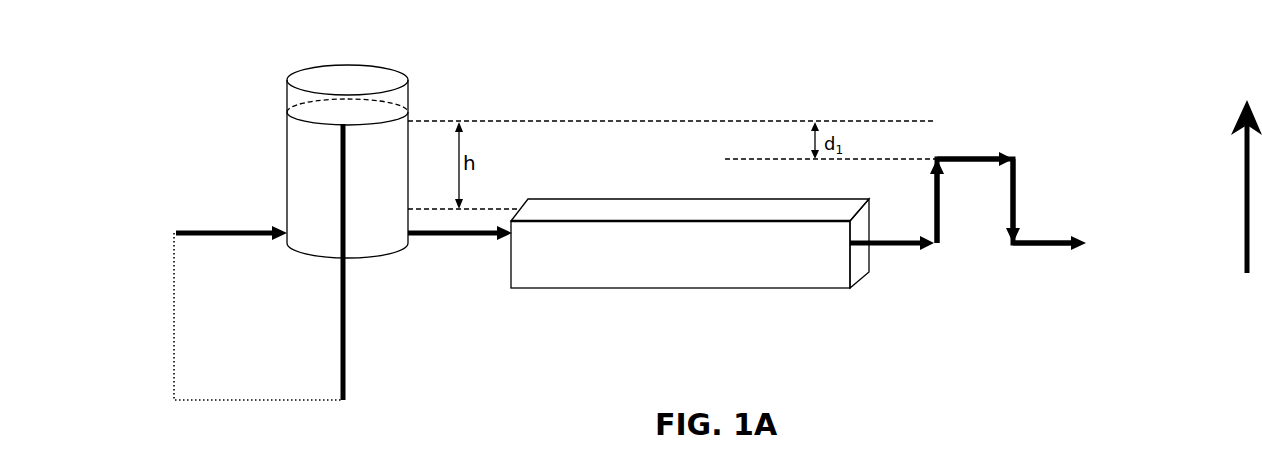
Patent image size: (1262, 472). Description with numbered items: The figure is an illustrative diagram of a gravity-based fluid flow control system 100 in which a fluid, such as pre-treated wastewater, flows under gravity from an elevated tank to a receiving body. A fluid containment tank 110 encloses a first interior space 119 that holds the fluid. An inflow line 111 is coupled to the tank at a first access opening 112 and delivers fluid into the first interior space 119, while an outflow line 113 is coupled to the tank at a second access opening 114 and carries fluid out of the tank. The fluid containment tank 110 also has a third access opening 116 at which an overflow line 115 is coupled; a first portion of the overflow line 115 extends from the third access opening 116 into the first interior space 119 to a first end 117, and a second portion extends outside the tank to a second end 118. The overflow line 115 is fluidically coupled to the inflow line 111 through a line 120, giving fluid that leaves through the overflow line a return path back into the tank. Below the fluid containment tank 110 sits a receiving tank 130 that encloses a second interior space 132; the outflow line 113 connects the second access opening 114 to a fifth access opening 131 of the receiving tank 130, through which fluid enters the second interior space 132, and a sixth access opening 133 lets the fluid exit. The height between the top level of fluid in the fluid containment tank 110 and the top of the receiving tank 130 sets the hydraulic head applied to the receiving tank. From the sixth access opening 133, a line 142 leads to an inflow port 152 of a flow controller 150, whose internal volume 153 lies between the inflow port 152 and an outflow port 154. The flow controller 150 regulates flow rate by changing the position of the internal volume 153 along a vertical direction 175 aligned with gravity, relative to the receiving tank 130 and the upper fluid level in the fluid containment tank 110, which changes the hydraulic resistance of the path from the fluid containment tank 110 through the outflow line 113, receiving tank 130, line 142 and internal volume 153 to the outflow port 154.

The gravity-based fluid flow control system 100 is at (690, 70).
The fluid containment tank 110 is at (288, 142).
The inflow line 111 is at (209, 224).
The first access opening 112 is at (286, 236).
The outflow line 113 is at (459, 246).
The second access opening 114 is at (405, 246).
The overflow line 115 is at (330, 313).
The third access opening 116 is at (343, 256).
The first end of the overflow line 117 is at (343, 124).
The second end of the overflow line 118 is at (346, 400).
The first interior space 119 is at (374, 90).
The line 120 is at (176, 379).
The receiving tank 130 is at (690, 283).
The fifth access opening 131 is at (514, 237).
The second interior space 132 is at (700, 220).
The sixth access opening 133 is at (860, 243).
The line 142 is at (890, 250).
The flow controller 150 is at (958, 130).
The inflow port 152 is at (938, 250).
The internal volume 153 is at (983, 158).
The outflow port 154 is at (1013, 250).
The vertical direction 175 is at (1230, 186).